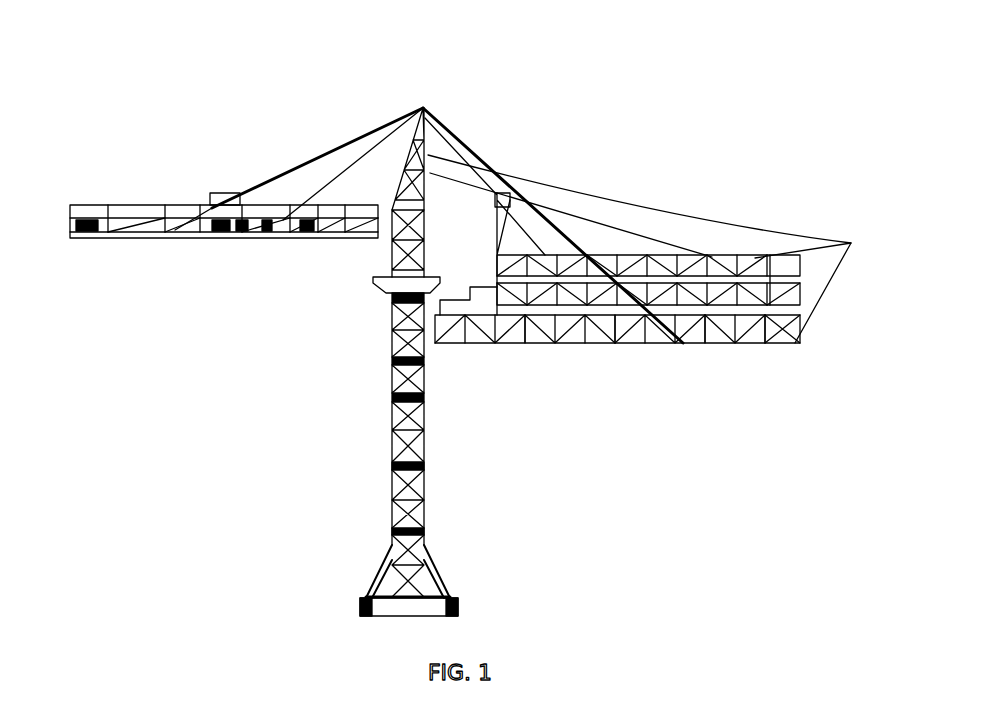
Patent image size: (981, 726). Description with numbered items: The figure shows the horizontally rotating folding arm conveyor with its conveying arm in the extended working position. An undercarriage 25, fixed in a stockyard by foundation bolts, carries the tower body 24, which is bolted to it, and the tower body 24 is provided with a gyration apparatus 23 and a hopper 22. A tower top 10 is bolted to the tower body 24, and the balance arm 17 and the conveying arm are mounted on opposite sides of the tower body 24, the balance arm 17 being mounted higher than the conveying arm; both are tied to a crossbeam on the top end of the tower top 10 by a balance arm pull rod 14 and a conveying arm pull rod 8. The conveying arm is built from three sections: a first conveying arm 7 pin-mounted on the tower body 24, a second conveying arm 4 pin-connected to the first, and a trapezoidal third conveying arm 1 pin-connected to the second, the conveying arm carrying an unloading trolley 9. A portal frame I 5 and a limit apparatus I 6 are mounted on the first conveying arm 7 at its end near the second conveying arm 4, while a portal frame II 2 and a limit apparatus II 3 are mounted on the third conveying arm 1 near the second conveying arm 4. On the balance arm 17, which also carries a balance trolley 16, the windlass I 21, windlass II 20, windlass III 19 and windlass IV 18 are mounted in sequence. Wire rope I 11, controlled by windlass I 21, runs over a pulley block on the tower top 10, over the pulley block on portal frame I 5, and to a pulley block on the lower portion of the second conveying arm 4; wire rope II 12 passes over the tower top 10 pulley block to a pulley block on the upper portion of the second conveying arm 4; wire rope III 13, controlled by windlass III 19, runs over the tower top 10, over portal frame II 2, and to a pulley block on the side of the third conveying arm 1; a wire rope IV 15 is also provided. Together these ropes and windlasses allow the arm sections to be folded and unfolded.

The third conveying arm 1 is at (745, 257).
The portal frame II 2 is at (500, 240).
The limit apparatus II 3 is at (497, 285).
The second conveying arm 4 is at (548, 337).
The portal frame I 5 is at (822, 305).
The limit apparatus I 6 is at (803, 343).
The first conveying arm 7 is at (747, 343).
The conveying arm pull rod 8 is at (627, 337).
The unloading trolley 9 is at (481, 343).
The tower top 10 is at (426, 111).
The wire rope I 11 is at (396, 190).
The wire rope II 12 is at (363, 205).
The wire rope III 13 is at (332, 205).
The balance arm pull rod 14 is at (258, 205).
The wire rope IV 15 is at (150, 213).
The balance trolley 16 is at (212, 200).
The balance arm 17 is at (165, 237).
The windlass IV 18 is at (265, 232).
The windlass III 19 is at (292, 222).
The windlass II 20 is at (423, 110).
The windlass I 21 is at (423, 110).
The hopper 22 is at (390, 293).
The gyration apparatus 23 is at (391, 362).
The tower body 24 is at (390, 440).
The undercarriage 25 is at (378, 570).